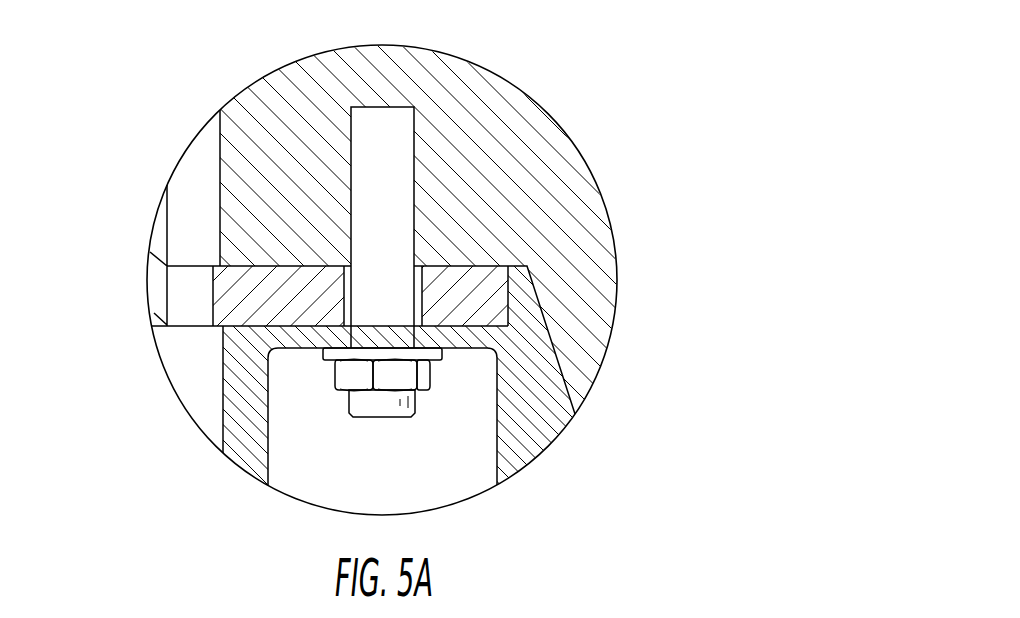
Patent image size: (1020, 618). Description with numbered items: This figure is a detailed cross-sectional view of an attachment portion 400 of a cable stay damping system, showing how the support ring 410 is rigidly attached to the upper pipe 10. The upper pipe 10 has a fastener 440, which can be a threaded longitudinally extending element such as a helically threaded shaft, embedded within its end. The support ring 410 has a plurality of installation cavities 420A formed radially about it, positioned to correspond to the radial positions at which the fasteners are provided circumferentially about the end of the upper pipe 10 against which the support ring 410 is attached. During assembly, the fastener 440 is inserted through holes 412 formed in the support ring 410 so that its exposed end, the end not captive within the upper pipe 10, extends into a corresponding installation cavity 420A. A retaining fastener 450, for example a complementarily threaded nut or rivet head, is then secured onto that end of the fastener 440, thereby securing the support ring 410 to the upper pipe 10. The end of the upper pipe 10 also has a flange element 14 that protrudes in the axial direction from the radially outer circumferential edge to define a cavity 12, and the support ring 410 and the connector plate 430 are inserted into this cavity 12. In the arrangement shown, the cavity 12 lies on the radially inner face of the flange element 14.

The mounting assembly 400 is at (123, 122).
The fastener 440 is at (398, 132).
The upper pipe 10 is at (535, 147).
The cavity 12 is at (517, 287).
The connector plate 430 is at (498, 298).
The flange element 14 is at (595, 318).
The support ring 410 is at (553, 420).
The holes 412 is at (340, 330).
The retaining fastener 450 is at (335, 378).
The installation cavity 420A is at (388, 472).